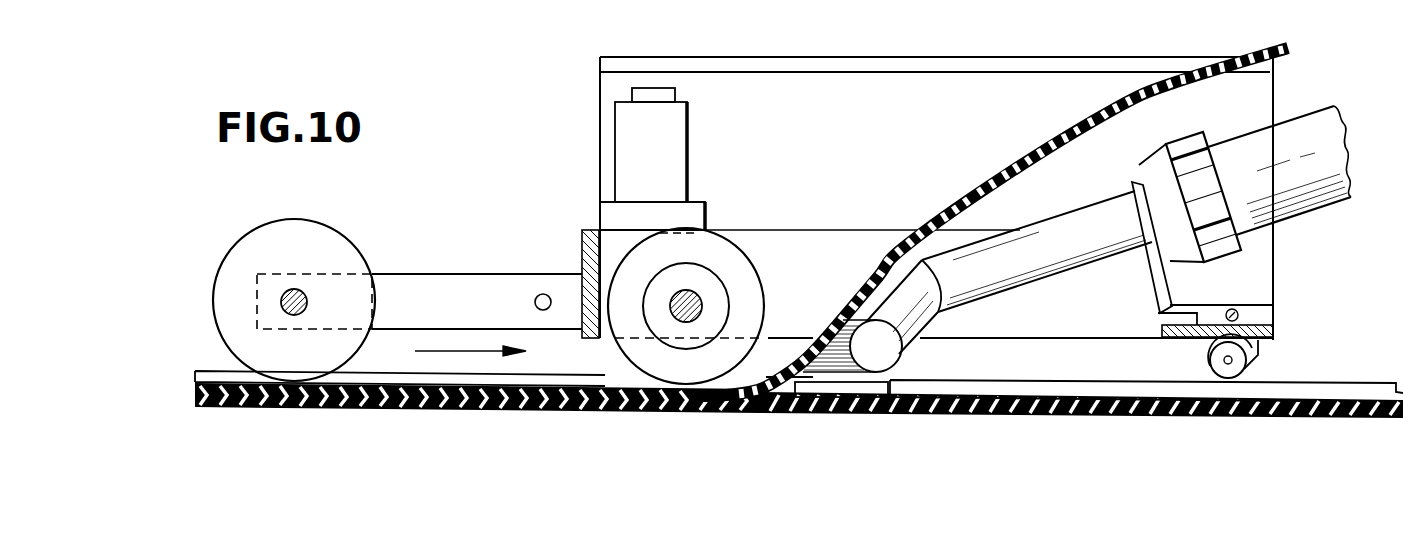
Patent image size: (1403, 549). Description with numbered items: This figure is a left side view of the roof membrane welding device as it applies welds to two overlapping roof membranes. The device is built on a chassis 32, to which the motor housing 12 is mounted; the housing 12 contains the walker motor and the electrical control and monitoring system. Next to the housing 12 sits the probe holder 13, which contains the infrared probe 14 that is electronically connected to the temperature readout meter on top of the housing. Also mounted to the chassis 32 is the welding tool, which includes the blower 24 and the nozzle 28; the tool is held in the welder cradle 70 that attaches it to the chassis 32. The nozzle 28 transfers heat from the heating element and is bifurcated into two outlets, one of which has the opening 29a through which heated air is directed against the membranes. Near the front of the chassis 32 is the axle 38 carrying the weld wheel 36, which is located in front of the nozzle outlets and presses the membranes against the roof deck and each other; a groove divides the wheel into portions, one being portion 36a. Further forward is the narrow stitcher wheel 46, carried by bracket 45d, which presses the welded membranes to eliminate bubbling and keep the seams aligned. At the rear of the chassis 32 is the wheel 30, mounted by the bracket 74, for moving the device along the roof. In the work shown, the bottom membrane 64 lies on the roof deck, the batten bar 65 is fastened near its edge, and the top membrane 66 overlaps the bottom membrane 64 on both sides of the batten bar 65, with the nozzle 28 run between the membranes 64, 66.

The motor housing 12 is at (600, 106).
The probe holder 13 is at (672, 160).
The infrared probe 14 is at (677, 89).
The blower 24 is at (1293, 127).
The nozzle 28 is at (905, 355).
The opening 29a is at (860, 392).
The wheel 30 is at (1247, 374).
The chassis 32 is at (582, 251).
The weld wheel 36 is at (713, 223).
The weld wheel portion 36a is at (733, 260).
The axle 38 is at (691, 322).
The bracket 45d is at (494, 278).
The narrow stitcher wheel 46 is at (318, 232).
The bottom membrane 64 is at (518, 408).
The batten bar 65 is at (1097, 412).
The top membrane 66 is at (1113, 103).
The welder cradle 70 is at (1247, 304).
The bracket 74 is at (1263, 350).